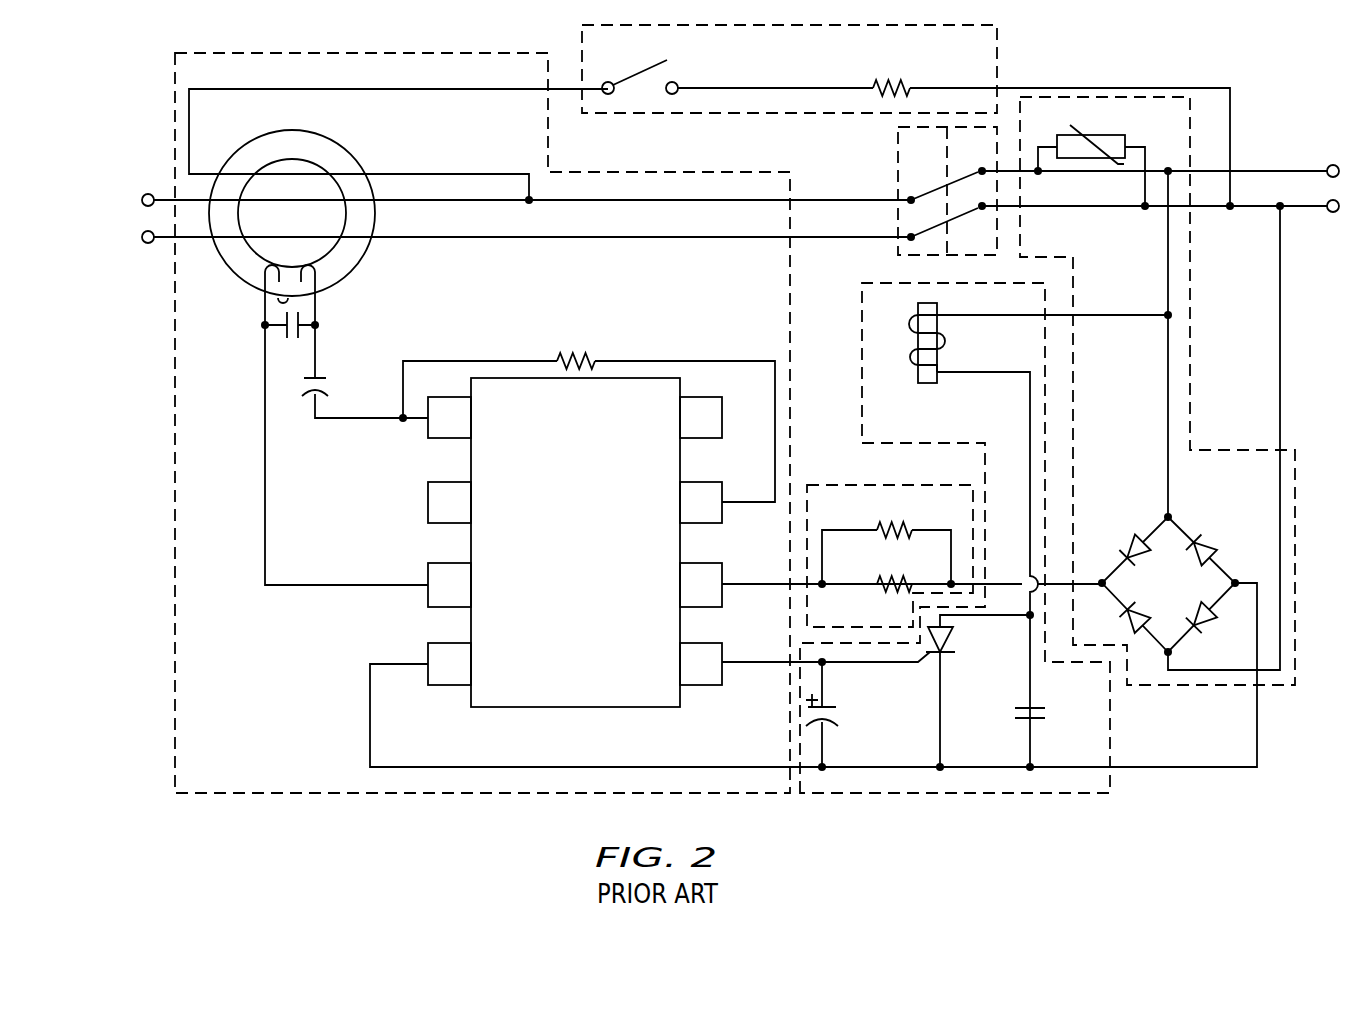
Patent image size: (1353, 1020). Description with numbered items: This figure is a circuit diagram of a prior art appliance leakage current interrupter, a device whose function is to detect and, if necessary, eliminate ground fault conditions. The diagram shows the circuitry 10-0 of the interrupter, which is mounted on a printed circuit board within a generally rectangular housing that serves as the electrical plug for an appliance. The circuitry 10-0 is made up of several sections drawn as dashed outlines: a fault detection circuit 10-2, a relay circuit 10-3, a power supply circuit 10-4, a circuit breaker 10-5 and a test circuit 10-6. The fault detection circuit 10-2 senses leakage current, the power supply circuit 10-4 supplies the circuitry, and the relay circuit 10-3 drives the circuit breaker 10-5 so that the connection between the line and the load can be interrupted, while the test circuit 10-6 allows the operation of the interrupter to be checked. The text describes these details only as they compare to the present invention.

The circuitry 10-0 is at (283, 805).
The fault detection circuit 10-2 is at (347, 52).
The relay circuit 10-3 is at (1112, 728).
The power supply circuit 10-4 is at (1192, 328).
The circuit breaker 10-5 is at (892, 156).
The test circuit 10-6 is at (998, 40).